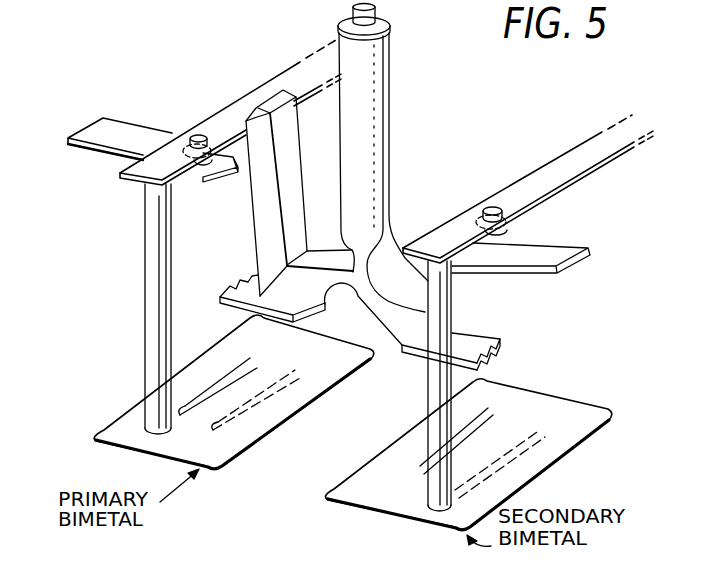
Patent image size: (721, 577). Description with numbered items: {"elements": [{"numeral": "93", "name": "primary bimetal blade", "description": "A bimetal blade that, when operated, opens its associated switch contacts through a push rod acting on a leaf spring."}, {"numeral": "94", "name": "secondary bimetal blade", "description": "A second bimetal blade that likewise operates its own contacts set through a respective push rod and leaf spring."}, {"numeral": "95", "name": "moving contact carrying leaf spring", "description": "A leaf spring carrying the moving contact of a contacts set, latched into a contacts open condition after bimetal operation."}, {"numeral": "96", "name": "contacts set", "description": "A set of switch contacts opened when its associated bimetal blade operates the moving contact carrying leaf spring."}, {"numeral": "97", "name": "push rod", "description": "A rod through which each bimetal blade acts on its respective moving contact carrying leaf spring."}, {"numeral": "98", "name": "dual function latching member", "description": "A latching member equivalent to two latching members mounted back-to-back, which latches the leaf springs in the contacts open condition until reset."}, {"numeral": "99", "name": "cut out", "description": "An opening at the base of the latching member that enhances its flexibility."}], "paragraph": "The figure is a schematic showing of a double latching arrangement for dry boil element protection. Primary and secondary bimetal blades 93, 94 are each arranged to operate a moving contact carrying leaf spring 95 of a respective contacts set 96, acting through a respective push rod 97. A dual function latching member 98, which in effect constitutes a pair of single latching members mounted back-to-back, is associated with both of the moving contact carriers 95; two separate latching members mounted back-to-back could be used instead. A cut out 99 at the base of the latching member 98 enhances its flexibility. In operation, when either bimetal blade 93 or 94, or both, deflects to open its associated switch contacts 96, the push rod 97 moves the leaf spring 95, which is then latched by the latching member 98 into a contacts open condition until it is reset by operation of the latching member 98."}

The primary bimetal 93 is at (170, 448).
The secondary bimetal 94 is at (390, 503).
The contact bar 95 is at (220, 122).
The bolt and pad 96 is at (216, 184).
The support rod 97 is at (150, 300).
The terminal post 98 is at (399, 136).
The connecting strip 99 is at (356, 296).